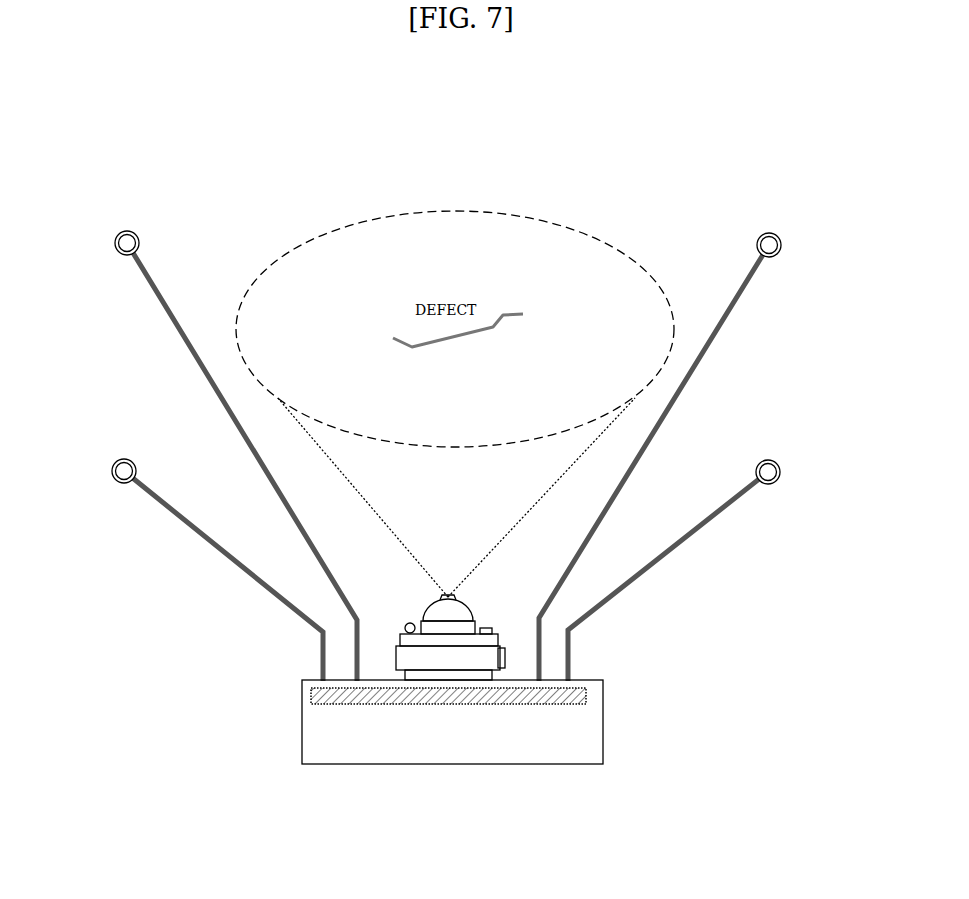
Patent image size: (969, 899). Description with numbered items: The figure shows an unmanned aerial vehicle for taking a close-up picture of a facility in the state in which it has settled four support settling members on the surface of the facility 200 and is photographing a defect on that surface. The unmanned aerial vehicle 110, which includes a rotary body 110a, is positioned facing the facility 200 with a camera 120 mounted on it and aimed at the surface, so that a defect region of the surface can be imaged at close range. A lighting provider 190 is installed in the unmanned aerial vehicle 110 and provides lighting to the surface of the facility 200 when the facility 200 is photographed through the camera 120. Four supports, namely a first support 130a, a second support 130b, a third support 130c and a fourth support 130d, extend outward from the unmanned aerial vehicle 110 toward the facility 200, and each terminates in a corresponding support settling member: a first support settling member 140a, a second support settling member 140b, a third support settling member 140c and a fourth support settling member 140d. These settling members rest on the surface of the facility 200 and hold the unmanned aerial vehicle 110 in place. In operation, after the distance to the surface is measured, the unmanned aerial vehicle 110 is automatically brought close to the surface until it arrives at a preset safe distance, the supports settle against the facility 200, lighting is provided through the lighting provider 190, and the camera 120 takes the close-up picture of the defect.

The facility 200 is at (335, 123).
The unmanned aerial vehicle 110 is at (302, 747).
The rotary body 110a is at (575, 703).
The camera 120 is at (465, 605).
The lighting provider 190 is at (408, 622).
The first support 130a is at (158, 302).
The second support 130b is at (693, 377).
The third support 130c is at (645, 575).
The fourth support 130d is at (237, 568).
The first support settling member 140a is at (137, 235).
The second support settling member 140b is at (773, 253).
The third support settling member 140c is at (778, 462).
The fourth support settling member 140d is at (117, 458).